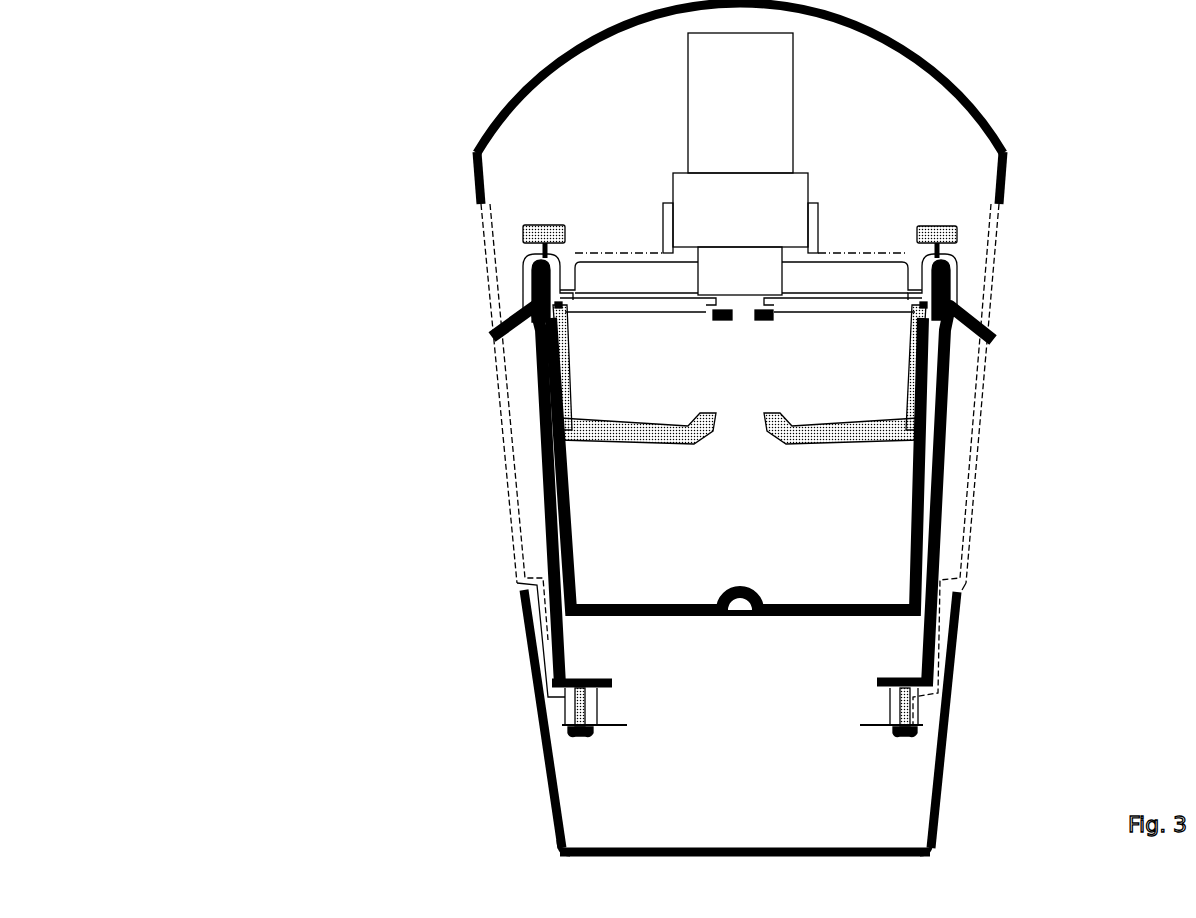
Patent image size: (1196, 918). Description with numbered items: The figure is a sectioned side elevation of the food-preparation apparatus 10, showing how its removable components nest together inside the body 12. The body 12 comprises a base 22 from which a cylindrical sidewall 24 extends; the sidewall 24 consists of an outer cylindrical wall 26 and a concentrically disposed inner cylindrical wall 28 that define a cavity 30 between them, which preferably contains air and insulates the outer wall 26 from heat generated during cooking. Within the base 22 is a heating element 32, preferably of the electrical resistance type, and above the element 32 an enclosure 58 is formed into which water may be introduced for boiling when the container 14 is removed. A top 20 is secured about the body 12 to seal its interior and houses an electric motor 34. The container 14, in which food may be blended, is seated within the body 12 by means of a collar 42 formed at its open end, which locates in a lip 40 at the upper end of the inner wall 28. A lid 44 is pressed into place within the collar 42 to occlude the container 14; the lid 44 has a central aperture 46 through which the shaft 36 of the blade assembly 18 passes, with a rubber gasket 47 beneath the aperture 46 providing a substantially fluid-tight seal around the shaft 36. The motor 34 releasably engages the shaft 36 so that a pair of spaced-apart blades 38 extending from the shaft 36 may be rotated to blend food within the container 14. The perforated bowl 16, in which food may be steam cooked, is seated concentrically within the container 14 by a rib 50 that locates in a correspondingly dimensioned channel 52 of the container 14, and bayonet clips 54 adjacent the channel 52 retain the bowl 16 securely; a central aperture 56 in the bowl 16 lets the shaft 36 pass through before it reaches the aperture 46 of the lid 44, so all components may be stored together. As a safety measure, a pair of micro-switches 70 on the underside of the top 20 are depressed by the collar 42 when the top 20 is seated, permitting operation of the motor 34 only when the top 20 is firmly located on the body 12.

The apparatus 10 is at (412, 158).
The body 12 is at (514, 724).
The container 14 is at (563, 500).
The perforated bowl 16 is at (657, 428).
The blade assembly 18 is at (768, 553).
The top 20 is at (1001, 128).
The base 22 is at (940, 745).
The cylindrical sidewall 24 is at (990, 519).
The outer cylindrical wall 26 is at (968, 564).
The inner cylindrical wall 28 is at (957, 365).
The cavity 30 is at (962, 443).
The element 32 is at (737, 700).
The electric motor 34 is at (743, 110).
The shaft 36 is at (750, 486).
The blades 38 is at (665, 578).
The lip 40 is at (538, 318).
The collar 42 is at (538, 285).
The lid 44 is at (833, 297).
The central aperture 46 is at (722, 304).
The gasket 47 is at (768, 320).
The rib 50 is at (924, 323).
The channel 52 is at (557, 322).
The bayonet clips 54 is at (927, 292).
The central aperture 56 is at (773, 422).
The enclosure 58 is at (754, 656).
The micro-switches 70 is at (541, 238).